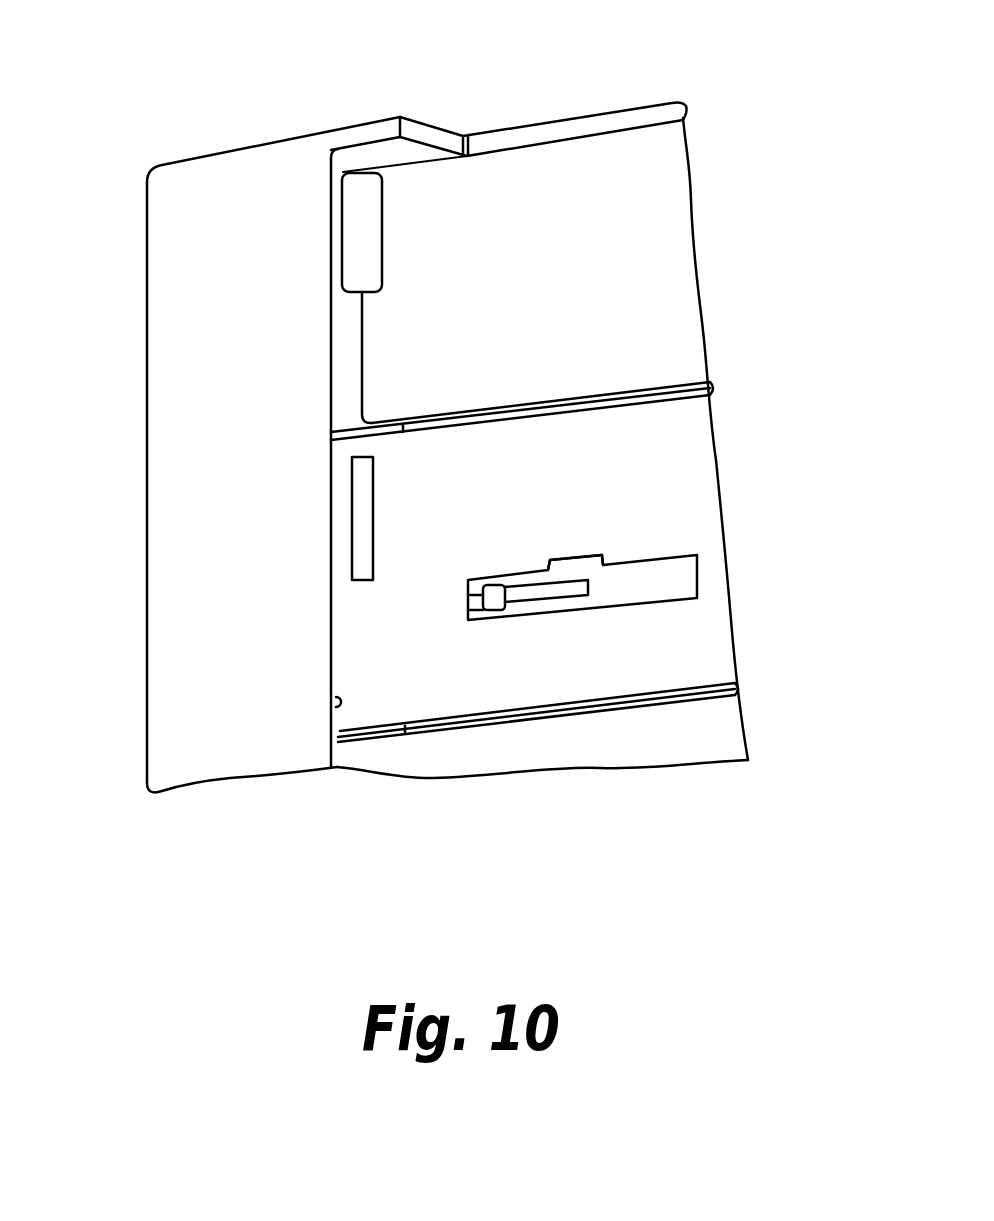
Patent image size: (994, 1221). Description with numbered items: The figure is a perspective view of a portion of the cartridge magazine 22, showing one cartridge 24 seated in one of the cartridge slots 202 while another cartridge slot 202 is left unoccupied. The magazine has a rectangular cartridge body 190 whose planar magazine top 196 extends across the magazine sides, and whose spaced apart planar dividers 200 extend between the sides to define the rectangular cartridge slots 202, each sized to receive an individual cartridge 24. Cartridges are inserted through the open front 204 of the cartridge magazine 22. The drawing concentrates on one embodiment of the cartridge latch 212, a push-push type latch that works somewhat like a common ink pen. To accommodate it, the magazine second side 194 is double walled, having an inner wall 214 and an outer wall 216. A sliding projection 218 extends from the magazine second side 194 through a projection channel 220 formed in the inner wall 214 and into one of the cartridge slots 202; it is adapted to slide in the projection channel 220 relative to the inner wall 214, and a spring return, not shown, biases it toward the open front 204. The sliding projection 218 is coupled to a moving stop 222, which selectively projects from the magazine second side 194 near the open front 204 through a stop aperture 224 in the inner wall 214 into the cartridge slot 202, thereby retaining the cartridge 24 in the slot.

The cartridge magazine 22 is at (514, 99).
The cartridge 24 is at (642, 280).
The cartridge body 190 is at (277, 132).
The magazine second side 194 is at (173, 542).
The magazine top 196 is at (212, 155).
The dividers 200 is at (712, 382).
The cartridge slots 202 is at (673, 468).
The open front 204 is at (585, 682).
The cartridge latch 212 is at (361, 185).
The inner wall 214 is at (335, 705).
The outer wall 216 is at (147, 678).
The sliding projection 218 is at (573, 588).
The projection channel 220 is at (683, 582).
The moving stop 222 is at (357, 258).
The stop aperture 224 is at (362, 483).